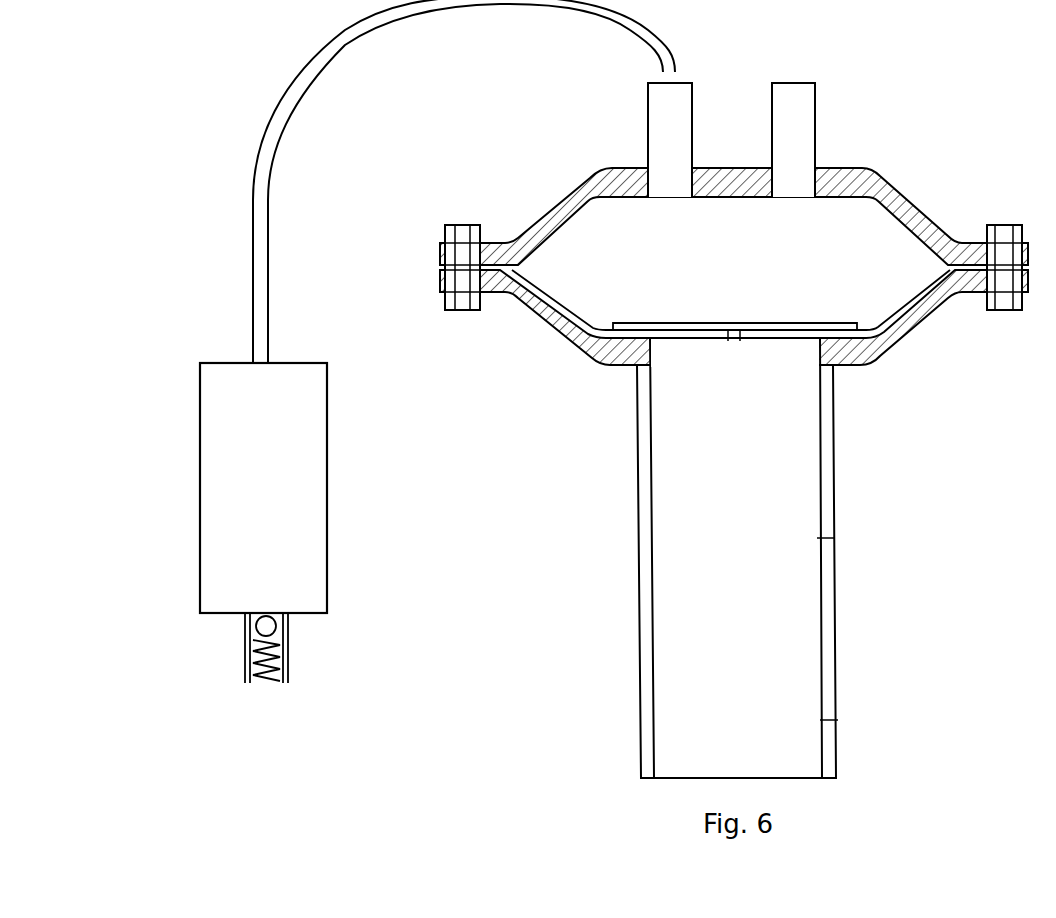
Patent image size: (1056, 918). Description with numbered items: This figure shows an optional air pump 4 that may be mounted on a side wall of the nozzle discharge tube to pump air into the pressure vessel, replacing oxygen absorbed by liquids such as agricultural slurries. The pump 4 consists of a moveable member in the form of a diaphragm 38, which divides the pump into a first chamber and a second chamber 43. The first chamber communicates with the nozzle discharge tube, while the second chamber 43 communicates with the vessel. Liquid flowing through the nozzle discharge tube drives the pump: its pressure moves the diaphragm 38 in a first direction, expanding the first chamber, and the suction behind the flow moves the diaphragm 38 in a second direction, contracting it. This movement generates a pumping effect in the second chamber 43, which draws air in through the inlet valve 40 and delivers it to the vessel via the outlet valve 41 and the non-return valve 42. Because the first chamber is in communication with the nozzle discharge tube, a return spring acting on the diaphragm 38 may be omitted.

The air pump 4 is at (923, 518).
The diaphragm 38 is at (950, 294).
The inlet valve 40 is at (803, 140).
The outlet valve 41 is at (660, 130).
The non-return valve 42 is at (280, 653).
The second chamber 43 is at (867, 237).